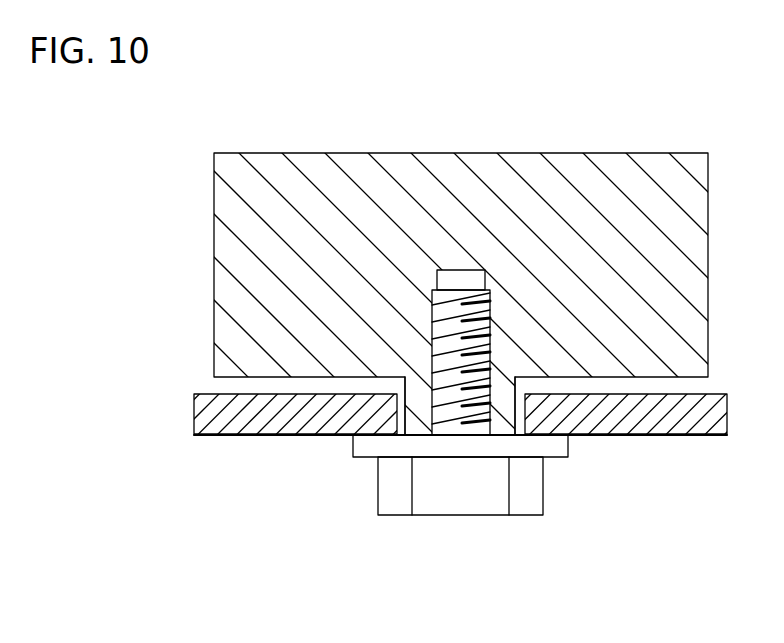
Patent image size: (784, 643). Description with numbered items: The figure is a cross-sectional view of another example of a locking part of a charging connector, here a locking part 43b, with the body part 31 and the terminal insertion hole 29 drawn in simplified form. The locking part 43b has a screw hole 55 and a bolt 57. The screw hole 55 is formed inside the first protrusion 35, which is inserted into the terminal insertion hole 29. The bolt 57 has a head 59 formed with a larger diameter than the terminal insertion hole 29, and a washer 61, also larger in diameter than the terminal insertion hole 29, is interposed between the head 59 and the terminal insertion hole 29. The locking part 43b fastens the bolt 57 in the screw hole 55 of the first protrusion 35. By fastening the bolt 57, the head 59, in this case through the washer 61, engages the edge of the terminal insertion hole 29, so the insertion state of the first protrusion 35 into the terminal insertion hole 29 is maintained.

The body part 31 is at (408, 178).
The terminal insertion hole 29 is at (393, 414).
The first protrusion 35 is at (503, 412).
The screw hole 55 is at (465, 303).
The bolt 57 is at (448, 302).
The washer 61 is at (558, 447).
The head 59 is at (463, 490).
The locking part 43b is at (603, 503).